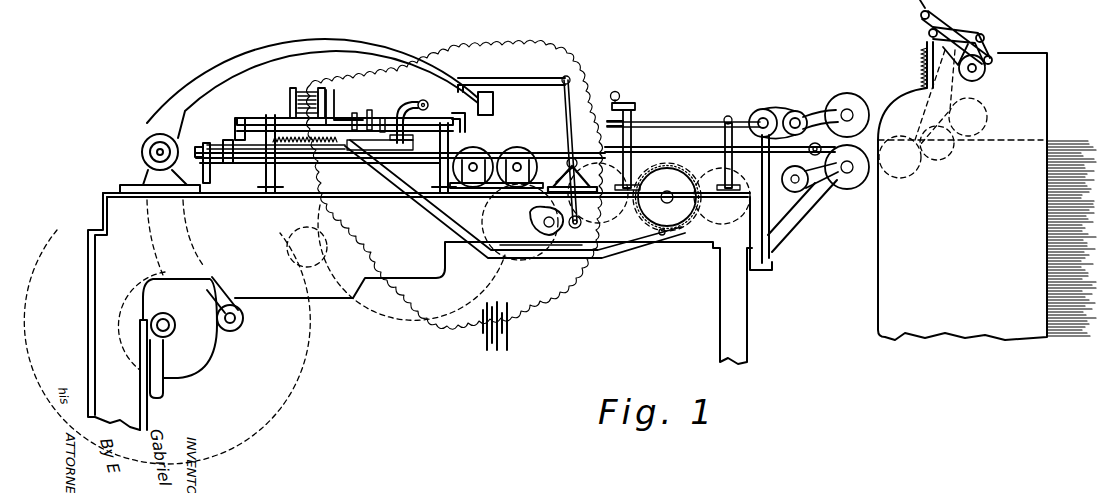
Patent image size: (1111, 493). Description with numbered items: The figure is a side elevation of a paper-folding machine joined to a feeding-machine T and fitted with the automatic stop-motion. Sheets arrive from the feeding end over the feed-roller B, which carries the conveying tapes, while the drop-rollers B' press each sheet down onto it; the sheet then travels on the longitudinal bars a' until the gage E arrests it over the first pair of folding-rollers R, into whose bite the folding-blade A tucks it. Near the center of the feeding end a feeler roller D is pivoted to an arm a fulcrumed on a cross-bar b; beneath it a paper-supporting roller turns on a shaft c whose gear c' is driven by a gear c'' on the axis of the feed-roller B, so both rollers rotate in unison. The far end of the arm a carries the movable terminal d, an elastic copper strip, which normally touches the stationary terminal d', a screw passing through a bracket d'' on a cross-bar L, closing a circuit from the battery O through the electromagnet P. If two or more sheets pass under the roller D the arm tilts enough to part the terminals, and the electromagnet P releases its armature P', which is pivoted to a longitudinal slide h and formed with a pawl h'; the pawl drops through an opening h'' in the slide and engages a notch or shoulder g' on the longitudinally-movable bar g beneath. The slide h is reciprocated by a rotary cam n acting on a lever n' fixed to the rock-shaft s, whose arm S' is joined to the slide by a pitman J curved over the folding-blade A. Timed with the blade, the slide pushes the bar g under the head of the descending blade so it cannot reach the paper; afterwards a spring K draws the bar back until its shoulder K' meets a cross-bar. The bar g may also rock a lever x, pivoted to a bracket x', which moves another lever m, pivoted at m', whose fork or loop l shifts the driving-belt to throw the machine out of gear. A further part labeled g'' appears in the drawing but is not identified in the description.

The gage E is at (226, 140).
The spring K is at (400, 167).
The shoulder K' is at (276, 143).
The electromagnet P is at (307, 94).
The armature P' is at (344, 107).
The longitudinal slide h is at (407, 121).
The pawl h' is at (355, 114).
The opening h'' is at (374, 109).
The longitudinally-movable bar g is at (427, 111).
The notch or shoulder g' is at (381, 117).
The bracket g'' is at (470, 122).
The lever x is at (380, 158).
The bracket x' is at (409, 156).
The folding-blade A is at (486, 105).
The pitman J is at (536, 78).
The folding-rollers R is at (496, 159).
The arm S' is at (560, 152).
The rock-shaft s is at (572, 176).
The rotary cam n is at (539, 221).
The lever n' is at (555, 174).
The movable terminal d is at (611, 150).
The stationary terminal d' is at (609, 90).
The bracket d'' is at (632, 96).
The cross-bar L is at (636, 108).
The arm a is at (683, 115).
The longitudinal bars a' is at (720, 142).
The cross-bar b is at (728, 144).
The fork or loop l is at (690, 214).
The lever m is at (515, 209).
The pivot m' is at (541, 266).
The battery O is at (495, 338).
The feeding-machine T is at (742, 170).
The feeler roller D is at (778, 109).
The feed-roller B is at (847, 182).
The drop-rollers B' is at (847, 100).
The shaft c is at (793, 157).
The gear c' is at (806, 186).
The gear c'' is at (799, 199).